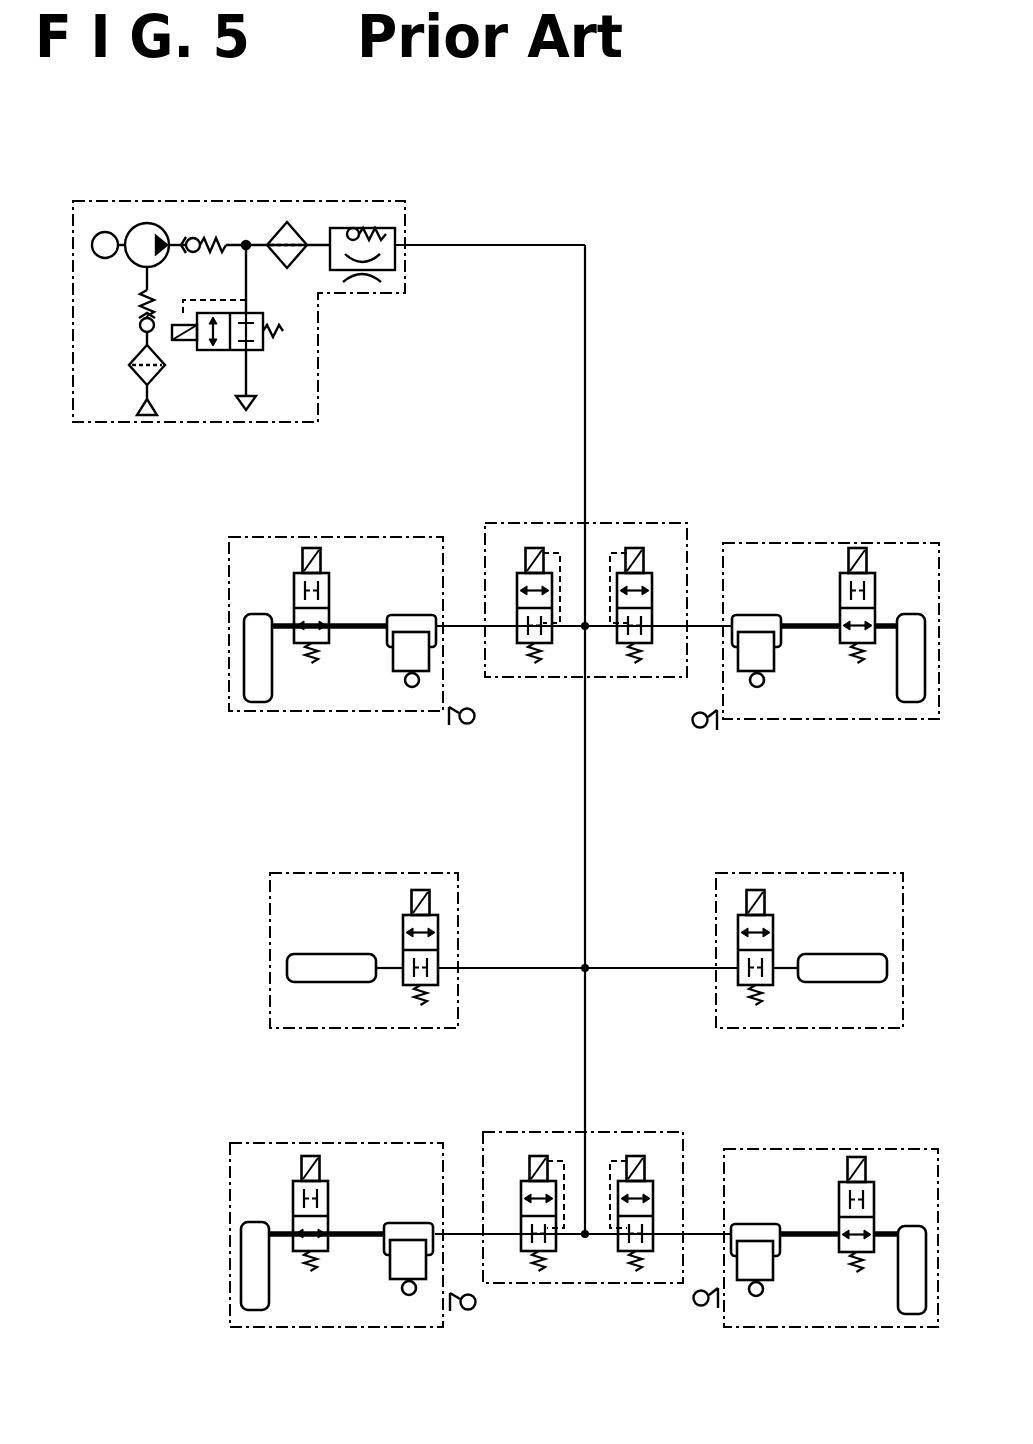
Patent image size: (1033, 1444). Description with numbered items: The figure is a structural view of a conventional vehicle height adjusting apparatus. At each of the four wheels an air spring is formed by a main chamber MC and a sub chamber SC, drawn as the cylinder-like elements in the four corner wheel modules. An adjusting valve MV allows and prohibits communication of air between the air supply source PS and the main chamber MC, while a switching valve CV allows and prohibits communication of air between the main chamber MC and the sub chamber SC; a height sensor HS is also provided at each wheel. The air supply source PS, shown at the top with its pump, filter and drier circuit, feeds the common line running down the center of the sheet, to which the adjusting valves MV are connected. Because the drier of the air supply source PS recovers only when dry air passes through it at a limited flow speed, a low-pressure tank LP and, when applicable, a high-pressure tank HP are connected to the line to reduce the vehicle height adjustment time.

The air supply source PS is at (220, 200).
The switching valve CV is at (308, 546).
The main chamber MC is at (403, 614).
The sub chamber SC is at (255, 684).
The height sensor HS is at (476, 713).
The adjusting valve MV is at (529, 547).
The low-pressure tank LP is at (325, 973).
The high-pressure tank HP is at (853, 971).